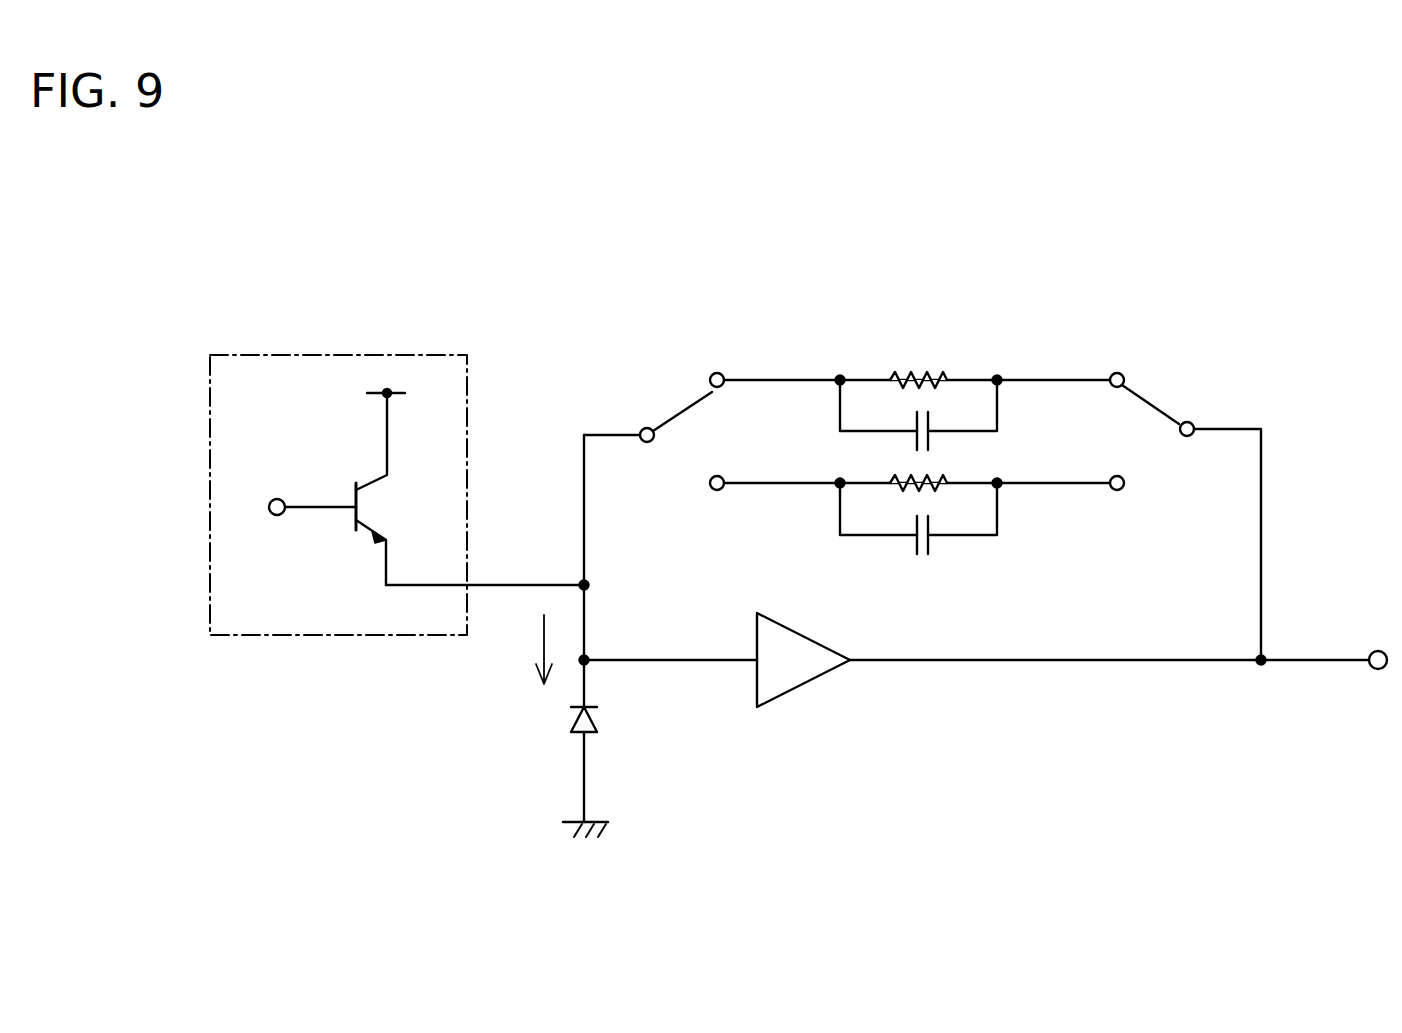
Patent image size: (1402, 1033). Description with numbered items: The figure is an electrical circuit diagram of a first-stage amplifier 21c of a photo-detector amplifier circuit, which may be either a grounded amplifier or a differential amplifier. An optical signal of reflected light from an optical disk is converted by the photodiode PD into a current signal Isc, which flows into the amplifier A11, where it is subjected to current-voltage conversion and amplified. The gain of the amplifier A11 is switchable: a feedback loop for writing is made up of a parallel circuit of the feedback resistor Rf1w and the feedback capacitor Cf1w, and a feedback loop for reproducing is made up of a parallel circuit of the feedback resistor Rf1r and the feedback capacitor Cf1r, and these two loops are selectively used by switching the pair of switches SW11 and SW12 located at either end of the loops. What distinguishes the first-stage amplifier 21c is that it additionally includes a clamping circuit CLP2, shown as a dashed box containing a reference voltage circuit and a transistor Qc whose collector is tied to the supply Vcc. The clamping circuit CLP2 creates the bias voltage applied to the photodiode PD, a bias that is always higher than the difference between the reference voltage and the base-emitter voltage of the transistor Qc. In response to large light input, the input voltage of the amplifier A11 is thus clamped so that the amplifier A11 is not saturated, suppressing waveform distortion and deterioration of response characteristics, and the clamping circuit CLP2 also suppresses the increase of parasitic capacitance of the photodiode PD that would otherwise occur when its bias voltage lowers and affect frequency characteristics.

The first-stage amplifier 21c is at (341, 272).
The clamping circuit CLP2 is at (425, 352).
The power supply voltage Vcc is at (407, 394).
The transistor Qc is at (372, 513).
The switch SW12 is at (674, 417).
The feedback resistor Rf1w is at (940, 376).
The feedback capacitor Cf1w is at (912, 446).
The feedback resistor Rf1r is at (940, 479).
The feedback capacitor Cf1r is at (912, 549).
The switch SW11 is at (1156, 412).
The current signal Isc is at (526, 649).
The photodiode PD is at (573, 721).
The amplifier A11 is at (797, 686).